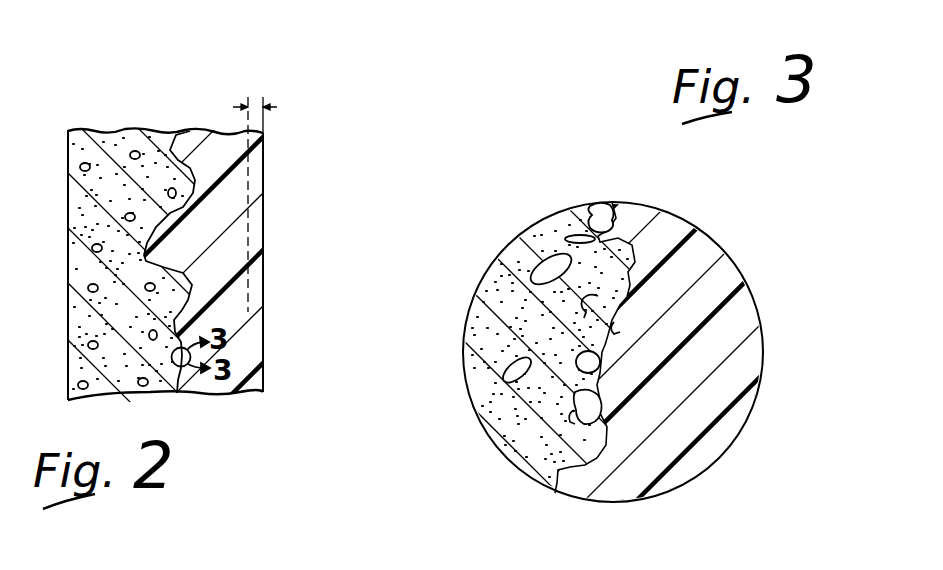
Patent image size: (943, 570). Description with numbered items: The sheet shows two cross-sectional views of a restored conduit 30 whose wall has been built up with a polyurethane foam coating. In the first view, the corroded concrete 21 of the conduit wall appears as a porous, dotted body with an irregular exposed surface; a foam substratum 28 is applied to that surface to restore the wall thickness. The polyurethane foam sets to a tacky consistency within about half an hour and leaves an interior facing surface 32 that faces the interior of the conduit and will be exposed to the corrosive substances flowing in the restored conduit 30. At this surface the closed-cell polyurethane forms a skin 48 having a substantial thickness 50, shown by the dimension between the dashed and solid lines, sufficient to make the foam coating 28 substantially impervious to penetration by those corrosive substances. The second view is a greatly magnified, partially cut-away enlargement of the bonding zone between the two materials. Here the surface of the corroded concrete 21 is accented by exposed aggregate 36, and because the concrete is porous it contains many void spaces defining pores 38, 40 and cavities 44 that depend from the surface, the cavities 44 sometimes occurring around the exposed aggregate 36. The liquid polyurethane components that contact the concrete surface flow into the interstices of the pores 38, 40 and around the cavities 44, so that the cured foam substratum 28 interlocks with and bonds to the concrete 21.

In FIG. 2, the corroded concrete 21 is at (131, 140).
In FIG. 3, the corroded concrete 21 is at (480, 332).
In FIG. 2, the foam substratum 28 is at (195, 136).
In FIG. 3, the foam substratum 28 is at (702, 246).
In FIG. 2, the restored conduit 30 is at (327, 101).
In FIG. 2, the interior facing surface 32 is at (267, 207).
In FIG. 3, the exposed aggregate 36 is at (531, 257).
In FIG. 3, the pore 38 is at (589, 236).
In FIG. 3, the pore 40 is at (590, 306).
In FIG. 3, the cavity 44 is at (570, 425).
In FIG. 2, the skin 48 is at (258, 393).
In FIG. 2, the thickness 50 is at (277, 107).